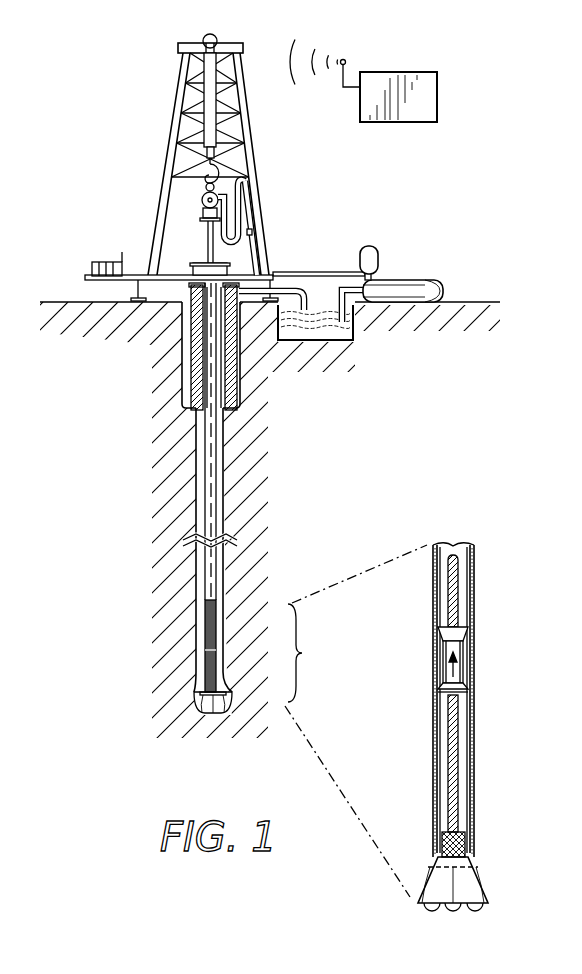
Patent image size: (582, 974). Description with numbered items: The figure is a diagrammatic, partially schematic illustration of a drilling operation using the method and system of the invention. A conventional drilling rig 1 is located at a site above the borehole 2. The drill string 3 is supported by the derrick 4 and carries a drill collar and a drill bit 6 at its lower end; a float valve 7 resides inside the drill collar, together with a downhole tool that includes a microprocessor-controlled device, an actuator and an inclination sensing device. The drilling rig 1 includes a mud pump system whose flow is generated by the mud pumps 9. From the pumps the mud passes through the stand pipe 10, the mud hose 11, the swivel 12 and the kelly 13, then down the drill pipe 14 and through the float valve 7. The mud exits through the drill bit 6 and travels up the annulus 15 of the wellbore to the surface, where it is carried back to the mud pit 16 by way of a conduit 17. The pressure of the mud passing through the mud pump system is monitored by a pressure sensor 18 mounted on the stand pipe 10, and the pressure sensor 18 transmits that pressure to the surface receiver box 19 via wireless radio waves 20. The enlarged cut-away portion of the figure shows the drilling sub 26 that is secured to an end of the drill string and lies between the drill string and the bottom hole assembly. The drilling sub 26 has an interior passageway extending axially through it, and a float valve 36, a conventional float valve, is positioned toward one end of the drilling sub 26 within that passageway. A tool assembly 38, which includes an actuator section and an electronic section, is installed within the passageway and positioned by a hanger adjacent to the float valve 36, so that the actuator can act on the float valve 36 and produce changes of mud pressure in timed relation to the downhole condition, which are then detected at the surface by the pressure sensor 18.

The drilling rig 1 is at (156, 132).
The borehole 2 is at (196, 490).
The drill string 3 is at (222, 470).
The derrick 4 is at (255, 128).
The drill bit 6 is at (231, 703).
The float valve 7 is at (214, 630).
The mud pumps 9 is at (437, 281).
The stand pipe 10 is at (257, 220).
The mud hose 11 is at (241, 190).
The swivel 12 is at (203, 197).
The kelly 13 is at (207, 245).
The drill pipe 14 is at (213, 584).
The annulus 15 is at (217, 520).
The mud pit 16 is at (341, 338).
The conduit 17 is at (306, 312).
The pressure sensor 18 is at (253, 236).
The surface receiver box 19 is at (422, 116).
The wireless radio waves 20 is at (318, 46).
The drilling sub 26 is at (462, 802).
The float valve 36 is at (463, 662).
The tool assembly 38 is at (458, 748).